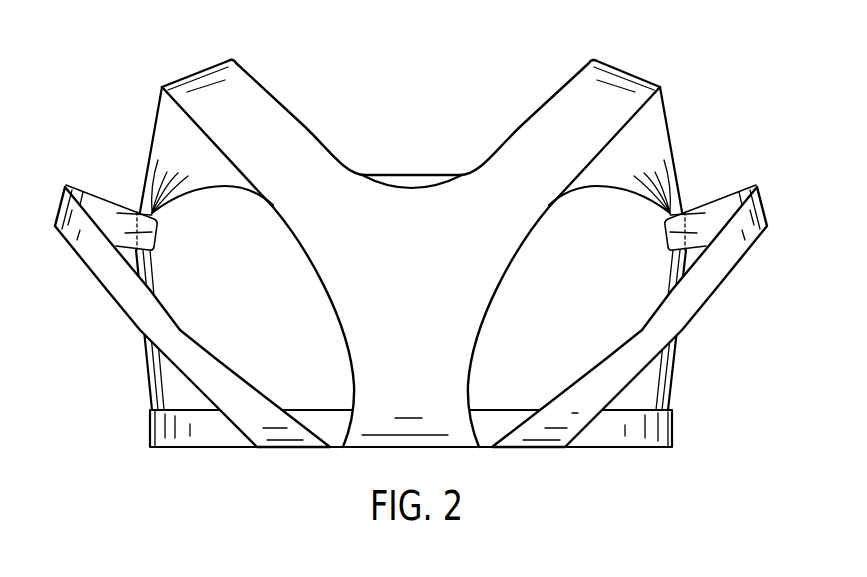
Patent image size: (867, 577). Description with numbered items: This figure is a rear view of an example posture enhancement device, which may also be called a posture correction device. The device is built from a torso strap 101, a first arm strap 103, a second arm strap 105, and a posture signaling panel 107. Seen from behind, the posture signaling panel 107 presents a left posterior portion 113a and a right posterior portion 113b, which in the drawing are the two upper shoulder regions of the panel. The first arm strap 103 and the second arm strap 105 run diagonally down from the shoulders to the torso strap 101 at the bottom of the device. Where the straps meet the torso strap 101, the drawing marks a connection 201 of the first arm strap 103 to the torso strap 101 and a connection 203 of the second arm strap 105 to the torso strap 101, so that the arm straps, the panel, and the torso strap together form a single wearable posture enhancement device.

The torso strap 101 is at (220, 437).
The first arm strap 103 is at (102, 208).
The second arm strap 105 is at (731, 205).
The posture signaling panel 107 is at (275, 120).
The left posterior portion 113a is at (203, 78).
The right posterior portion 113b is at (622, 78).
The connection 201 is at (283, 410).
The connection 203 is at (538, 410).